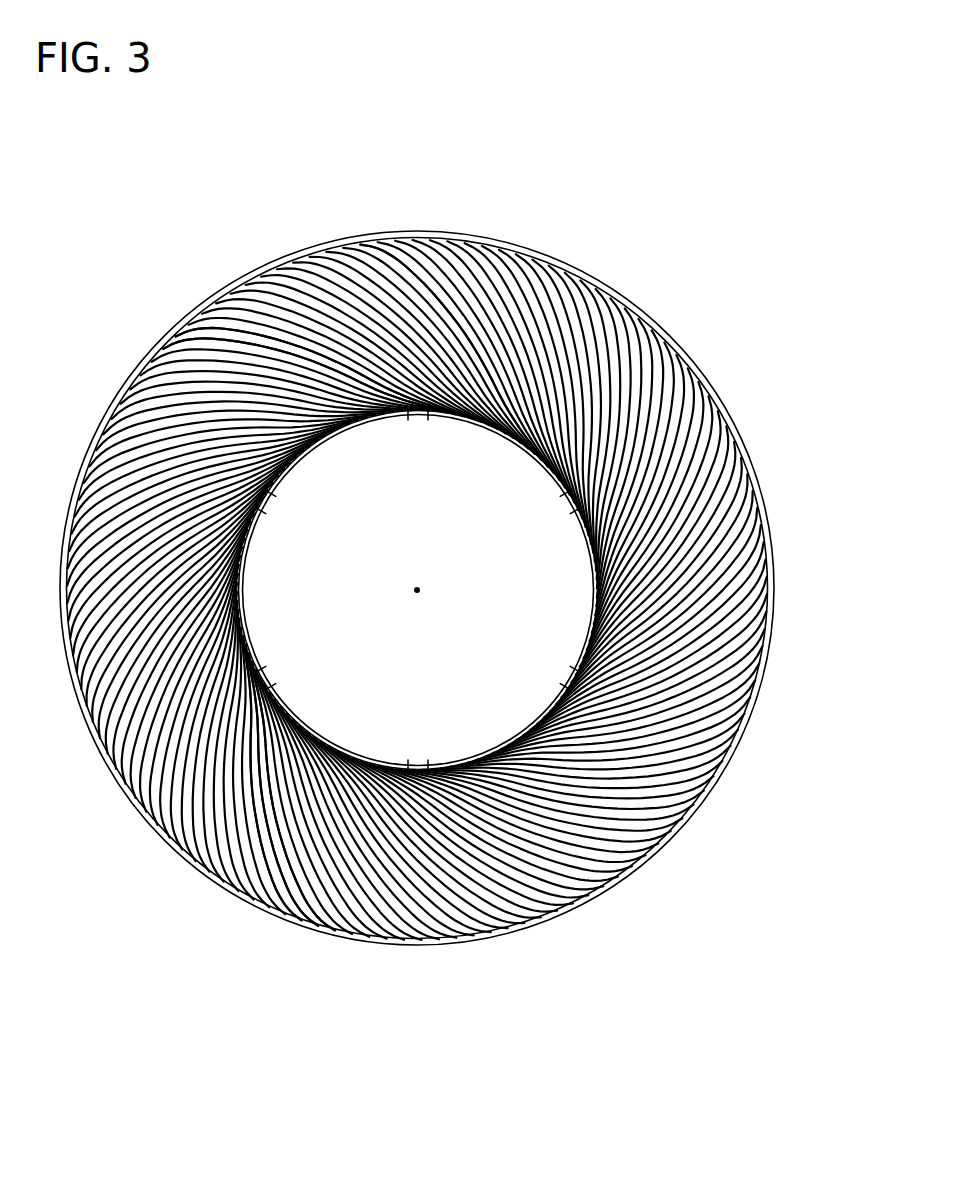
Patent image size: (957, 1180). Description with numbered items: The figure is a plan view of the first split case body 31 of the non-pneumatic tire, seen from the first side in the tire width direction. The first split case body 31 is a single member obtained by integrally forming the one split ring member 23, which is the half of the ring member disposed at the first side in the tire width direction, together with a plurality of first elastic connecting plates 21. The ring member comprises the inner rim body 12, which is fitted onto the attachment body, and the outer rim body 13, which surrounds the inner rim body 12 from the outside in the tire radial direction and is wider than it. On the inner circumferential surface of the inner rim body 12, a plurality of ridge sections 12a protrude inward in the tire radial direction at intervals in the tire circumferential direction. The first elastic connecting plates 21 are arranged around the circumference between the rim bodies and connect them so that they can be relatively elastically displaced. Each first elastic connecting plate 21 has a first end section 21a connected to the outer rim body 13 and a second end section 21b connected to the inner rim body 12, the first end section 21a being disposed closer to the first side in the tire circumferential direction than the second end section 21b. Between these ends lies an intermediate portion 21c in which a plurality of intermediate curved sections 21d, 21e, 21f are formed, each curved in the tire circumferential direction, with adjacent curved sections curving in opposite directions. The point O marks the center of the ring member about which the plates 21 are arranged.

The first split case body 31 is at (637, 118).
The first elastic connecting plate 21 is at (465, 307).
The first end section 21a is at (372, 247).
The second end section 21b is at (458, 420).
The intermediate portion 21c is at (261, 342).
The intermediate curved section 21d is at (263, 830).
The intermediate curved section 21e is at (303, 903).
The intermediate curved section 21f is at (250, 747).
The split ring member 23 is at (673, 165).
The outer rim body 13 is at (570, 268).
The inner rim body 12 is at (516, 432).
The ridge section 12a is at (283, 682).
The rotation center O is at (417, 590).